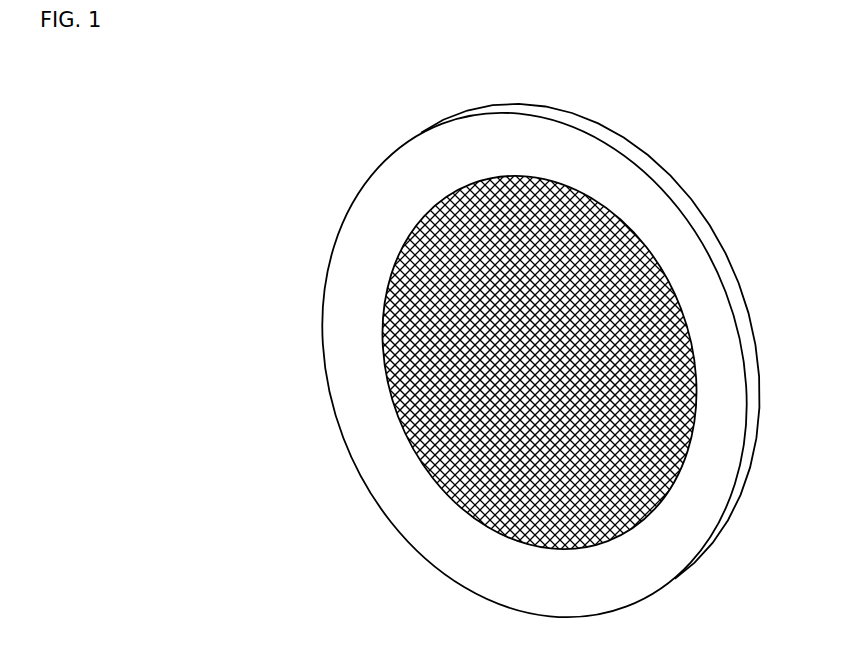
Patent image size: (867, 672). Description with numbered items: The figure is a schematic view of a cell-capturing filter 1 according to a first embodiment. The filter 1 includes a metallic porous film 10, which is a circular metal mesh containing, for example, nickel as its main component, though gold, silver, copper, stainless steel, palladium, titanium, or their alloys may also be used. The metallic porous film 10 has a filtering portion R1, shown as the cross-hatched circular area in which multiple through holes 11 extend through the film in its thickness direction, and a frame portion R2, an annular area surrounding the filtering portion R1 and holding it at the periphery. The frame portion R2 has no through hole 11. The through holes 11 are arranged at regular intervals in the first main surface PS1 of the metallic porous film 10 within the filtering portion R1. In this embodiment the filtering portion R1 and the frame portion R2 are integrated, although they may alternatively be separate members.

The cell-capturing filter 1 is at (347, 142).
The metallic porous film 10 is at (357, 465).
The through holes 11 is at (468, 481).
The filtering portion R1 is at (606, 260).
The frame portion R2 is at (347, 288).
The first main surface PS1 is at (673, 545).